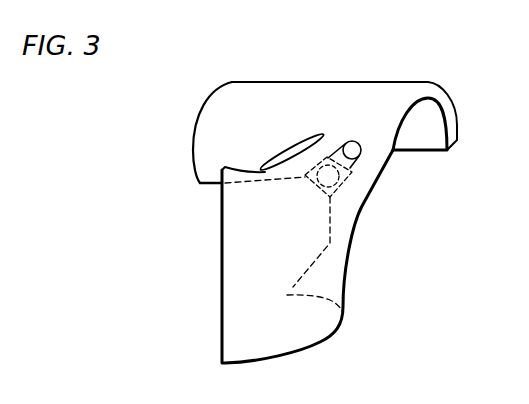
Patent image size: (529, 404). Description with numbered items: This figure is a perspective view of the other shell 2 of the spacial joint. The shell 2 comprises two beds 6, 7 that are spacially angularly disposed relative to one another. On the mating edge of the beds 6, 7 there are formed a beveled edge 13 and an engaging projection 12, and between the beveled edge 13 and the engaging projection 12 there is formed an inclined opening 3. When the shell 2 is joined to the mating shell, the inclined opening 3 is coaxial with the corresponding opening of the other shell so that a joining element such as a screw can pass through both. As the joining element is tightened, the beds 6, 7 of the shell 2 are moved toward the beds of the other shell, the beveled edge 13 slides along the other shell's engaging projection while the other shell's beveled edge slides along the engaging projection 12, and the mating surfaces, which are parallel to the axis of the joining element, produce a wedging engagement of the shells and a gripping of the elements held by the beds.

The shell 2 is at (275, 132).
The inclined opening 3 is at (357, 157).
The bed 6 is at (216, 140).
The bed 7 is at (331, 277).
The engaging projection 12 is at (298, 144).
The beveled edge 13 is at (293, 290).